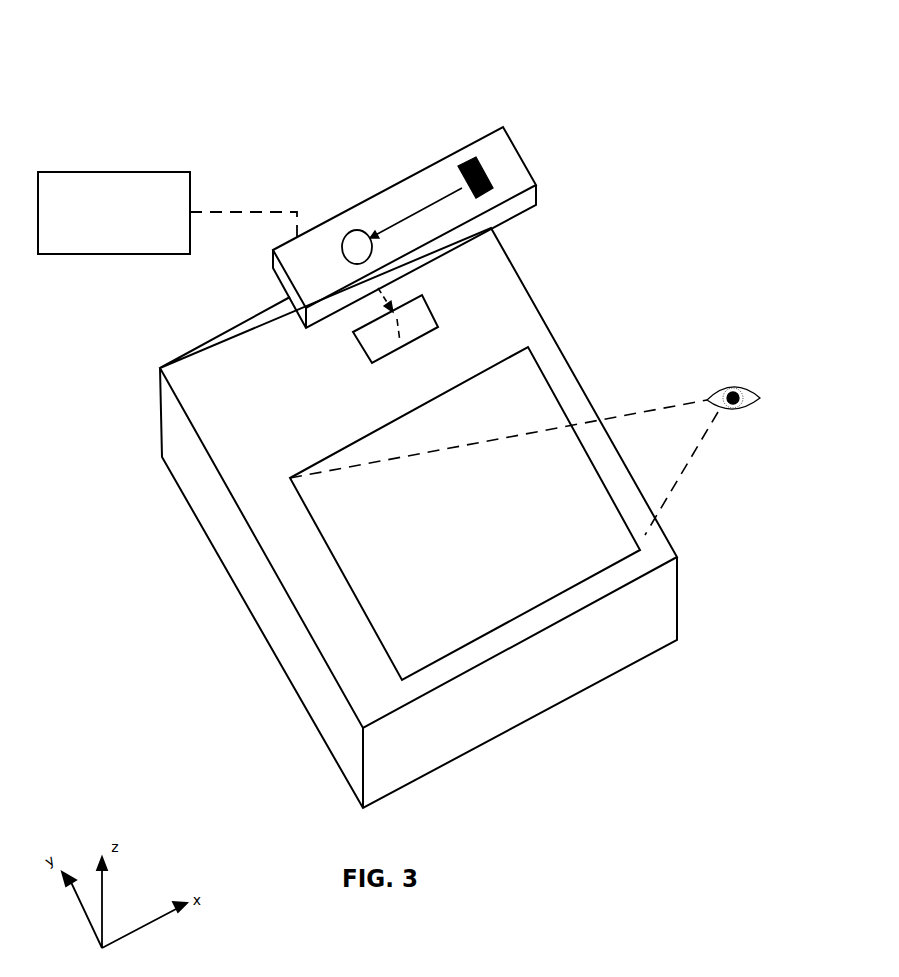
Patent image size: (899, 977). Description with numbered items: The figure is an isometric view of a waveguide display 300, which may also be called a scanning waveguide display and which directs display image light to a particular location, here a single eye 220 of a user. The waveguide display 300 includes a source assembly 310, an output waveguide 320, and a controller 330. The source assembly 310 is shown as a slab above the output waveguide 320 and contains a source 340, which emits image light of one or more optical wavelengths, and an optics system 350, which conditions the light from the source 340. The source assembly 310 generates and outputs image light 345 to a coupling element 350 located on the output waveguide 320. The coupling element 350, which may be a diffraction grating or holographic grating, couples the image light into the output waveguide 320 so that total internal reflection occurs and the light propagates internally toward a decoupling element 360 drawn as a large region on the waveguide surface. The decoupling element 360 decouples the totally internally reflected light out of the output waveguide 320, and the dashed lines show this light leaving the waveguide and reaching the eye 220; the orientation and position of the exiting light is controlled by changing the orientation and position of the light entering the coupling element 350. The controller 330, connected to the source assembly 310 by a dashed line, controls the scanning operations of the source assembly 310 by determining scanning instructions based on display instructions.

The waveguide display 300 is at (73, 44).
The source assembly 310 is at (507, 173).
The output waveguide 320 is at (300, 612).
The controller 330 is at (99, 236).
The source 340 is at (467, 160).
The image light 345 is at (398, 310).
The optics system / coupling element 350 is at (663, 351).
The decoupling element 360 is at (393, 668).
The eye 220 is at (738, 437).